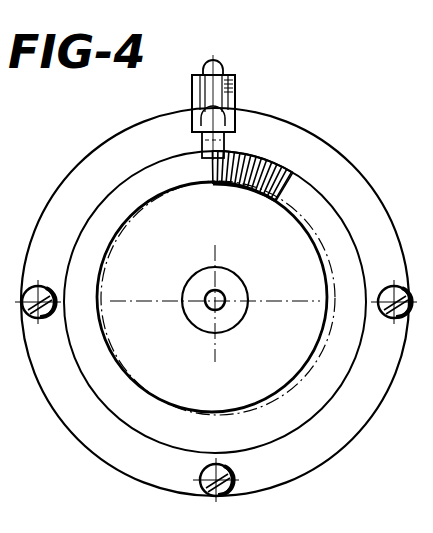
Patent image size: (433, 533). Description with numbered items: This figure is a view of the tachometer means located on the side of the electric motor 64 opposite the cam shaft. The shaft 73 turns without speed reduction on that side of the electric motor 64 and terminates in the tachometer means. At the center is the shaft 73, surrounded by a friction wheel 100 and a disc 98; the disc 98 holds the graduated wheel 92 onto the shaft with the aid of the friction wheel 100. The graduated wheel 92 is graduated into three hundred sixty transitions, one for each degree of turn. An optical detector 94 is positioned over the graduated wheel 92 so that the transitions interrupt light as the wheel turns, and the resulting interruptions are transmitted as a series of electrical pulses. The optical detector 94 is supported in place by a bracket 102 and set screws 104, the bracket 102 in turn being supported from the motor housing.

The electric motor 64 is at (360, 425).
The shaft 73 is at (222, 293).
The graduated wheel 92 is at (303, 178).
The optical detector 94 is at (202, 139).
The disc 98 is at (275, 385).
The friction wheel 100 is at (236, 320).
The bracket 102 is at (237, 97).
The set screws 104 is at (223, 70).